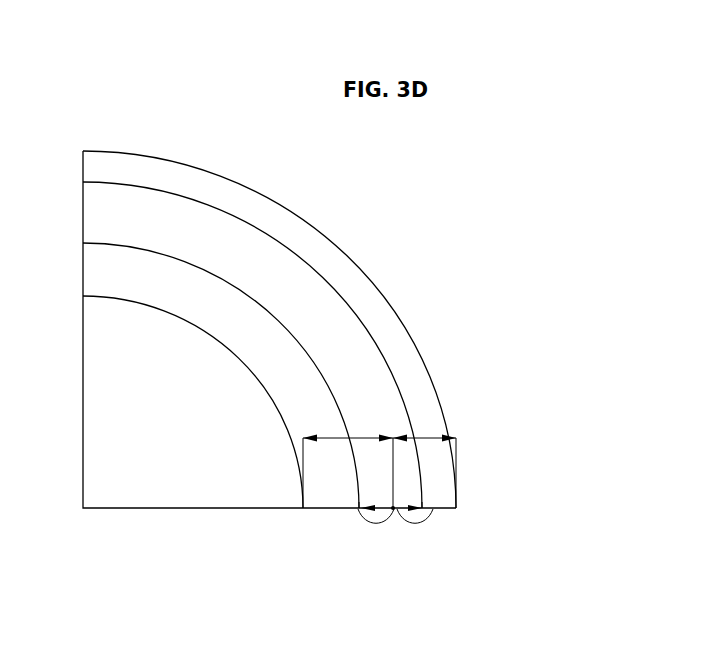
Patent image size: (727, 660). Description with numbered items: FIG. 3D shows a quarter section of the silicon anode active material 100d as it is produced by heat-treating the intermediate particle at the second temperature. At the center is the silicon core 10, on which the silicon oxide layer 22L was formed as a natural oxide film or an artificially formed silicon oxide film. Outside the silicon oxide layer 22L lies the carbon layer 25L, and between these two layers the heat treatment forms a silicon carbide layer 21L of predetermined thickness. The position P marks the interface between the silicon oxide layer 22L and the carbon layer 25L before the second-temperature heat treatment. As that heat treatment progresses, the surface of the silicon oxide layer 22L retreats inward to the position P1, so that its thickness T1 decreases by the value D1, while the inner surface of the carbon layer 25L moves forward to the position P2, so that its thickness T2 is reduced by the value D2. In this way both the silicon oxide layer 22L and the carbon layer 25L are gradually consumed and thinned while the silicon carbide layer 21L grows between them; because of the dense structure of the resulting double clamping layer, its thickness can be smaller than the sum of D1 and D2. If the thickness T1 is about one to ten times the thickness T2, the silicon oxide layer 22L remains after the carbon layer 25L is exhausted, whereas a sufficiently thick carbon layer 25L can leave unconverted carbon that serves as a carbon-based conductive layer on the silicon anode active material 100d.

The silicon anode active material 100d is at (325, 216).
The silicon core 10 is at (140, 470).
The silicon oxide layer 22L is at (277, 330).
The silicon carbide layer 21L is at (357, 368).
The carbon layer 25L is at (430, 409).
The thickness of the silicon oxide layer T1 is at (348, 461).
The thickness of the carbon layer T2 is at (424, 461).
The decrease value of silicon oxide layer thickness D1 is at (376, 524).
The decrease value of carbon layer thickness D2 is at (415, 523).
The interface position P is at (393, 512).
The retreated surface position of silicon oxide layer P1 is at (362, 508).
The advanced inner surface position of carbon layer P2 is at (430, 509).